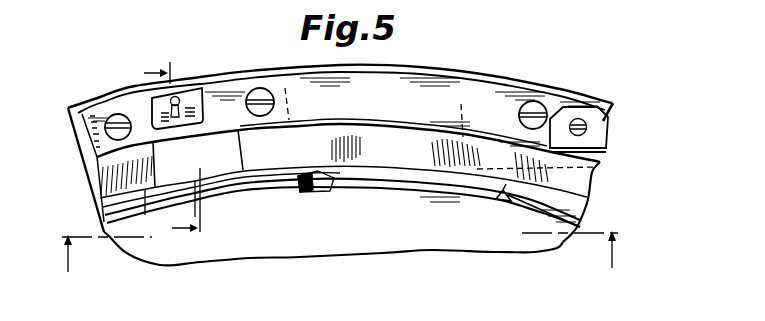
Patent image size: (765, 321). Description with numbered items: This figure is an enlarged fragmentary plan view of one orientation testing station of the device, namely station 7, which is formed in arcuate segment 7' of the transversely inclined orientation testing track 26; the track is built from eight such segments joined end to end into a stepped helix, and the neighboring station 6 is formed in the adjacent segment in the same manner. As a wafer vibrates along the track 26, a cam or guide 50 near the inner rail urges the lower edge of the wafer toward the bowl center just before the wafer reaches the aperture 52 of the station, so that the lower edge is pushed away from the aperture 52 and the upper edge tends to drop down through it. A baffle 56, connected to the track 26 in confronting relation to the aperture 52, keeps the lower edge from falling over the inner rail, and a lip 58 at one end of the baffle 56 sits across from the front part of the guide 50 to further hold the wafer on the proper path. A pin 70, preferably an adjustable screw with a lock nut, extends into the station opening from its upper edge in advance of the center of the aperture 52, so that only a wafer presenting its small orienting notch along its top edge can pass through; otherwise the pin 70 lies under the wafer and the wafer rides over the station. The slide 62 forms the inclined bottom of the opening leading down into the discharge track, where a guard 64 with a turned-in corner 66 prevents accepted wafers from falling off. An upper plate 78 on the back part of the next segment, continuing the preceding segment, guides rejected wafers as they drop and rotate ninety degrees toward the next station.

The orientation testing station 6 is at (340, 250).
The orientation testing station 7 is at (200, 149).
The arcuate segment 7' is at (448, 119).
The track 26 is at (384, 137).
The cam or guide 50 is at (377, 170).
The aperture 52 is at (243, 162).
The baffle 56 is at (268, 190).
The lip 58 is at (322, 197).
The slide 62 is at (218, 170).
The guard 64 is at (561, 241).
The corner 66 is at (500, 203).
The pin 70 is at (178, 106).
The upper plate 78 is at (598, 137).